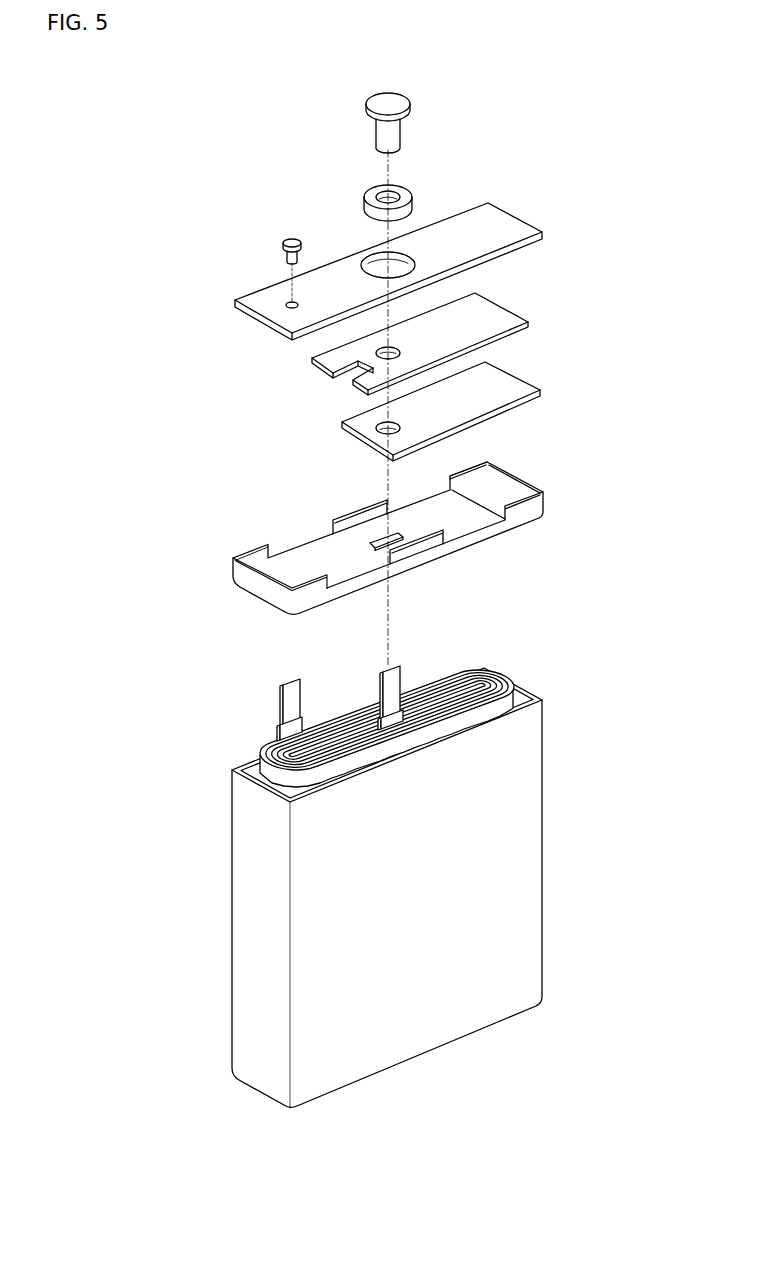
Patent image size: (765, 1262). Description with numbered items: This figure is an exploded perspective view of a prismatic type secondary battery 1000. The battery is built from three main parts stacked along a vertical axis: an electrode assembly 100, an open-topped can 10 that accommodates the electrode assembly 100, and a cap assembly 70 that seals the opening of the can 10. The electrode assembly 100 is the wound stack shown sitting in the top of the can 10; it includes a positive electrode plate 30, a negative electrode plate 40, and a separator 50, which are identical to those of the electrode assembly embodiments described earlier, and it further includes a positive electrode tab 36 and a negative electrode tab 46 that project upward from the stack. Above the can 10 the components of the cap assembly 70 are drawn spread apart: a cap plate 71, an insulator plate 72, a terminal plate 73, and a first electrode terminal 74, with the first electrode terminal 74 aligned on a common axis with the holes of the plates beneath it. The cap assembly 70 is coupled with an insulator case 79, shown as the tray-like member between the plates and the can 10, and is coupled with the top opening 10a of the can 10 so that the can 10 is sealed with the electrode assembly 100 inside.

The prismatic type secondary battery 1000 is at (186, 126).
The electrode assembly 100 is at (542, 605).
The can 10 is at (523, 775).
The top opening 10a is at (535, 700).
The positive electrode plate 30 is at (488, 667).
The positive electrode tab 36 is at (290, 707).
The negative electrode plate 40 is at (512, 683).
The negative electrode tab 46 is at (392, 688).
The separator 50 is at (502, 670).
The cap assembly 70 is at (170, 245).
The cap plate 71 is at (272, 309).
The insulator plate 72 is at (332, 355).
The terminal plate 73 is at (365, 425).
The first electrode terminal 74 is at (365, 103).
The insulator case 79 is at (310, 540).